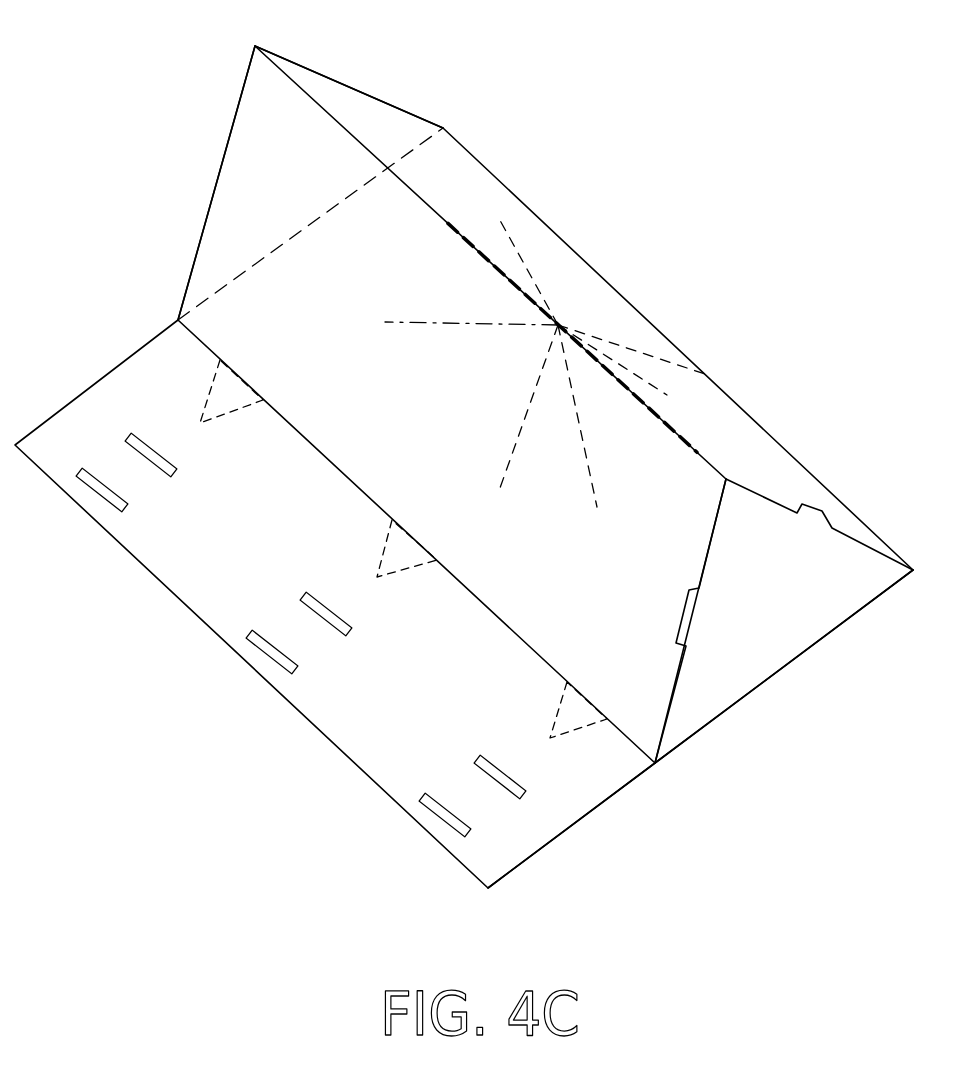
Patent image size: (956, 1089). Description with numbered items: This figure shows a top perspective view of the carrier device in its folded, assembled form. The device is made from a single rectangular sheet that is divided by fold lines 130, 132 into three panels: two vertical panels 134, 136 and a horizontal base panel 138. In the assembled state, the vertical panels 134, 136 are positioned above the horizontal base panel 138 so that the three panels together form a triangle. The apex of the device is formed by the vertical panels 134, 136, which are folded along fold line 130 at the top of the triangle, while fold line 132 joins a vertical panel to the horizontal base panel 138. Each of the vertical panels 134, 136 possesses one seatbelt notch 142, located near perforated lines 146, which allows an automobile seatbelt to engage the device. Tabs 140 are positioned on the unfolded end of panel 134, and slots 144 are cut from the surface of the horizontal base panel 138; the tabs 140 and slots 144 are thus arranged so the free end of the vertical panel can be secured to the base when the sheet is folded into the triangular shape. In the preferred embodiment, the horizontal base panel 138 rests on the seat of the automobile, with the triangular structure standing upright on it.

The fold line 130 is at (348, 135).
The fold line 132 is at (500, 180).
The vertical panel 134 is at (220, 207).
The vertical panel 136 is at (383, 112).
The horizontal base panel 138 is at (547, 830).
The tab 140 is at (242, 418).
The seatbelt notch 142 is at (813, 525).
The slot 144 is at (290, 592).
The perforated line 146 is at (500, 462).